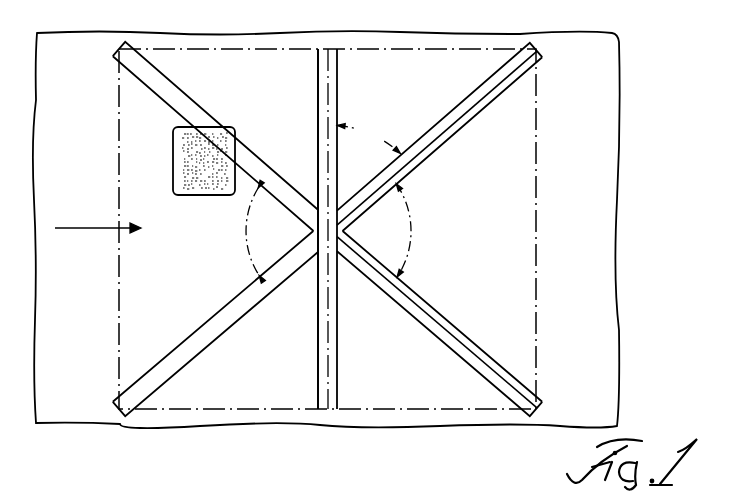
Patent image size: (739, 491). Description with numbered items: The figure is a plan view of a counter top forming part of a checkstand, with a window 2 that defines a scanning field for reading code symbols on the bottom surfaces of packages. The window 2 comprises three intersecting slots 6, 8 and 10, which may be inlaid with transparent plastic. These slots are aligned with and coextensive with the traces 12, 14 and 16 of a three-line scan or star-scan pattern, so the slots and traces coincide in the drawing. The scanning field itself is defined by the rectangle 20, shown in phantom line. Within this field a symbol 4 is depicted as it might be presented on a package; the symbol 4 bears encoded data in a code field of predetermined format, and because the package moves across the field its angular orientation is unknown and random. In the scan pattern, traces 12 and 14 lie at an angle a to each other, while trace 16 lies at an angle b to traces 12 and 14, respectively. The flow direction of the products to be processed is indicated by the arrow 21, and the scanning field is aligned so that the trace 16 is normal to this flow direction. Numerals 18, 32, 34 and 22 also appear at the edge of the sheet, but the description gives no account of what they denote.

The window 2 is at (461, 74).
The symbol 4 is at (227, 128).
The slot 6 is at (481, 120).
The slot 8 is at (461, 335).
The slot 10 is at (338, 363).
The trace 12 is at (420, 156).
The trace 14 is at (418, 307).
The trace 16 is at (325, 345).
The rectangle 20 is at (283, 50).
The arrow 21 is at (86, 228).
The angle a is at (324, 231).
The angle b is at (369, 134).
The element 18 is at (213, 490).
The element 32 is at (305, 480).
The element 34 is at (429, 480).
The element 22 is at (496, 482).